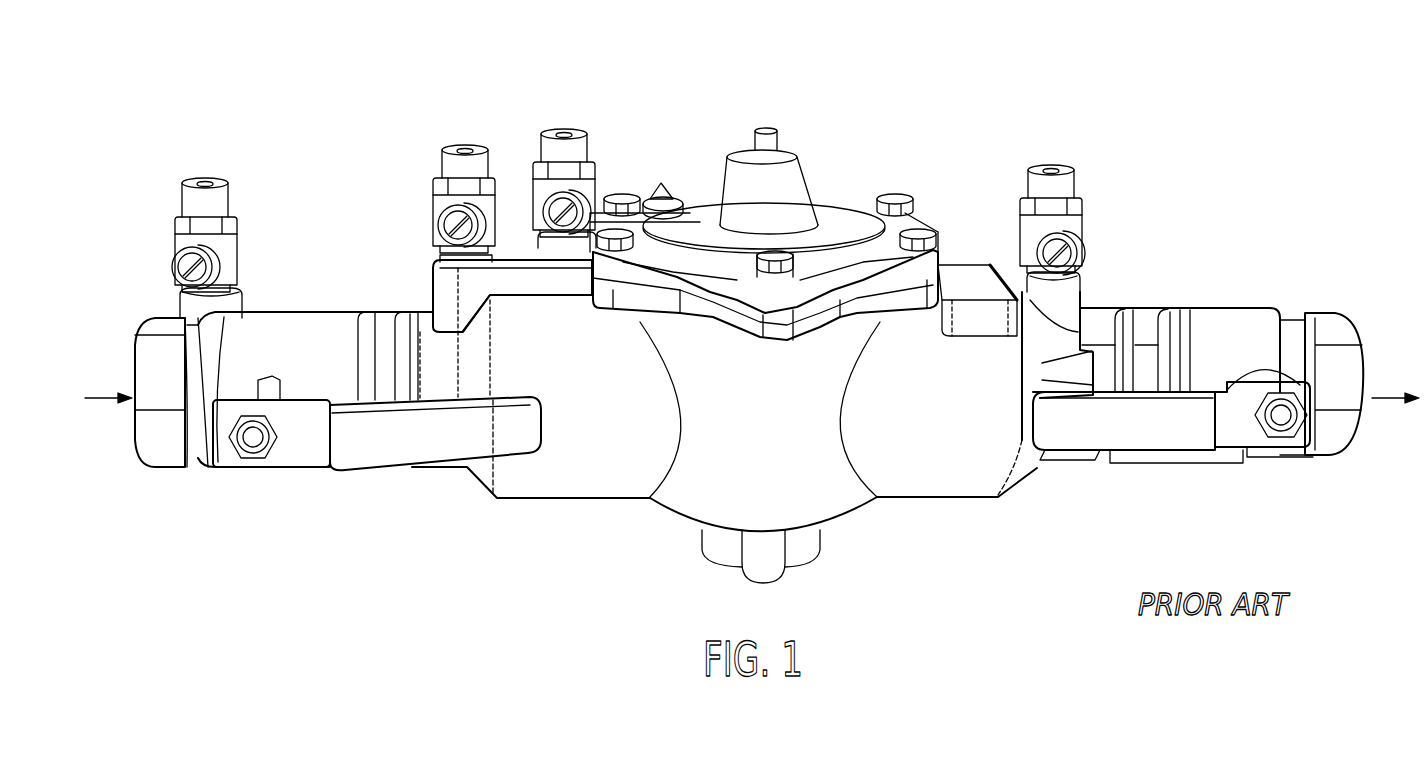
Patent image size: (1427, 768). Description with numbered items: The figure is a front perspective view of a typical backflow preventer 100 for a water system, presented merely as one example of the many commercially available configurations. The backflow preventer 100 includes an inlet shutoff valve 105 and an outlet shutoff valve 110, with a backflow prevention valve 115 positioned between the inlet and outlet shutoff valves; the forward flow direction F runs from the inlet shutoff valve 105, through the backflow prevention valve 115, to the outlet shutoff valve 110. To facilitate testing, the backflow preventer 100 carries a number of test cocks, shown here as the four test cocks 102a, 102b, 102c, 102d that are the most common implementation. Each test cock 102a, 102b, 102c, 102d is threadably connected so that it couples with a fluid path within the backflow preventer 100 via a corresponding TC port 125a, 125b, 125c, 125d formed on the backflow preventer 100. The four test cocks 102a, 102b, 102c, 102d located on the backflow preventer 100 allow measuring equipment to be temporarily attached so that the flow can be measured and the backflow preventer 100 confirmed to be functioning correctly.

The backflow preventer 100 is at (1180, 80).
The test cock 102a is at (228, 208).
The test cock 102b is at (442, 147).
The test cock 102c is at (593, 148).
The test cock 102d is at (1077, 183).
The TC port 125a is at (243, 305).
The TC port 125b is at (433, 268).
The TC port 125c is at (537, 242).
The TC port 125d is at (1080, 240).
The inlet shutoff valve 105 is at (288, 472).
The outlet shutoff valve 110 is at (1243, 433).
The backflow prevention valve 115 is at (820, 513).